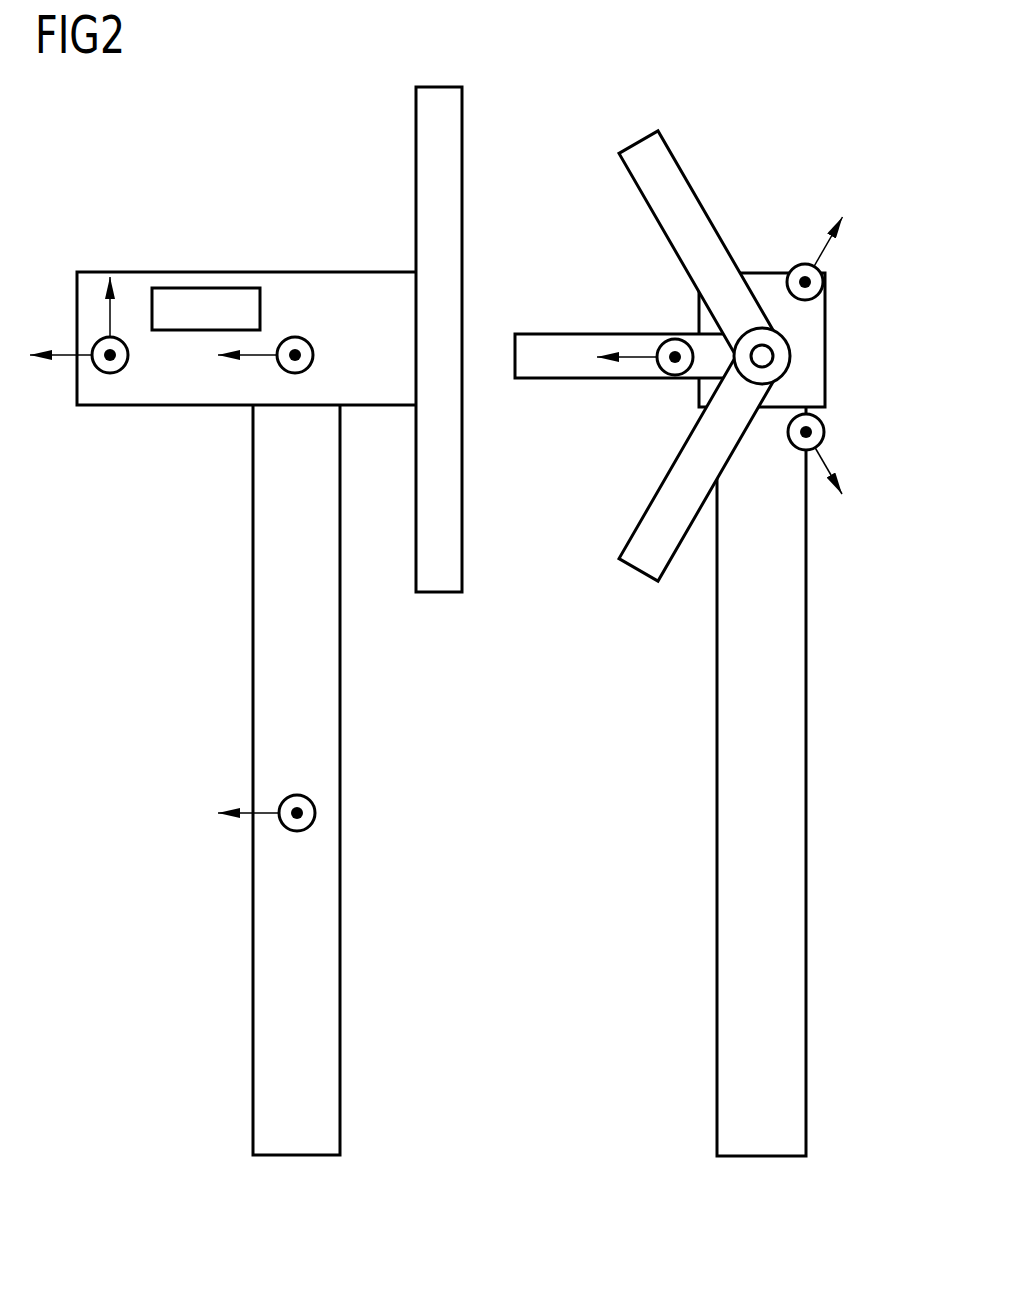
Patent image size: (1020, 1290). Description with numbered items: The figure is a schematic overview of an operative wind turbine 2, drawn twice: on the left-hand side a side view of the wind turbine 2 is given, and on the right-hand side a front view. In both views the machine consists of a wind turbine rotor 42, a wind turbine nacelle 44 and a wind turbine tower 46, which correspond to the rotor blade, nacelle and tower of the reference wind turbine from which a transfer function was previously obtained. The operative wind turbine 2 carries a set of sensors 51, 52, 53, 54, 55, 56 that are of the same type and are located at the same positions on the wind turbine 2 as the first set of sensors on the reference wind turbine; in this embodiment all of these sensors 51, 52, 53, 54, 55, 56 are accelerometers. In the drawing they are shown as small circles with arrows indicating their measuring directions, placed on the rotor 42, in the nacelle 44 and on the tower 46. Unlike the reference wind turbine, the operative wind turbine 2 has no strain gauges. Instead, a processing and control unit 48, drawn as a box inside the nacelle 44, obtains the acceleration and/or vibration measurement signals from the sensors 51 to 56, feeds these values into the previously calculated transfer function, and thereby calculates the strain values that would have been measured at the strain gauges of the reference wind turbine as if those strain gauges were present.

The operative wind turbine 2 is at (246, 132).
The wind turbine rotor 42 is at (452, 125).
The wind turbine nacelle 44 is at (327, 283).
The wind turbine tower 46 is at (330, 1009).
The processing and control unit 48 is at (205, 300).
The sensor 51 is at (795, 272).
The sensor 52 is at (824, 426).
The sensor 53 is at (675, 367).
The sensor 54 is at (128, 355).
The sensor 55 is at (313, 355).
The sensor 56 is at (297, 797).